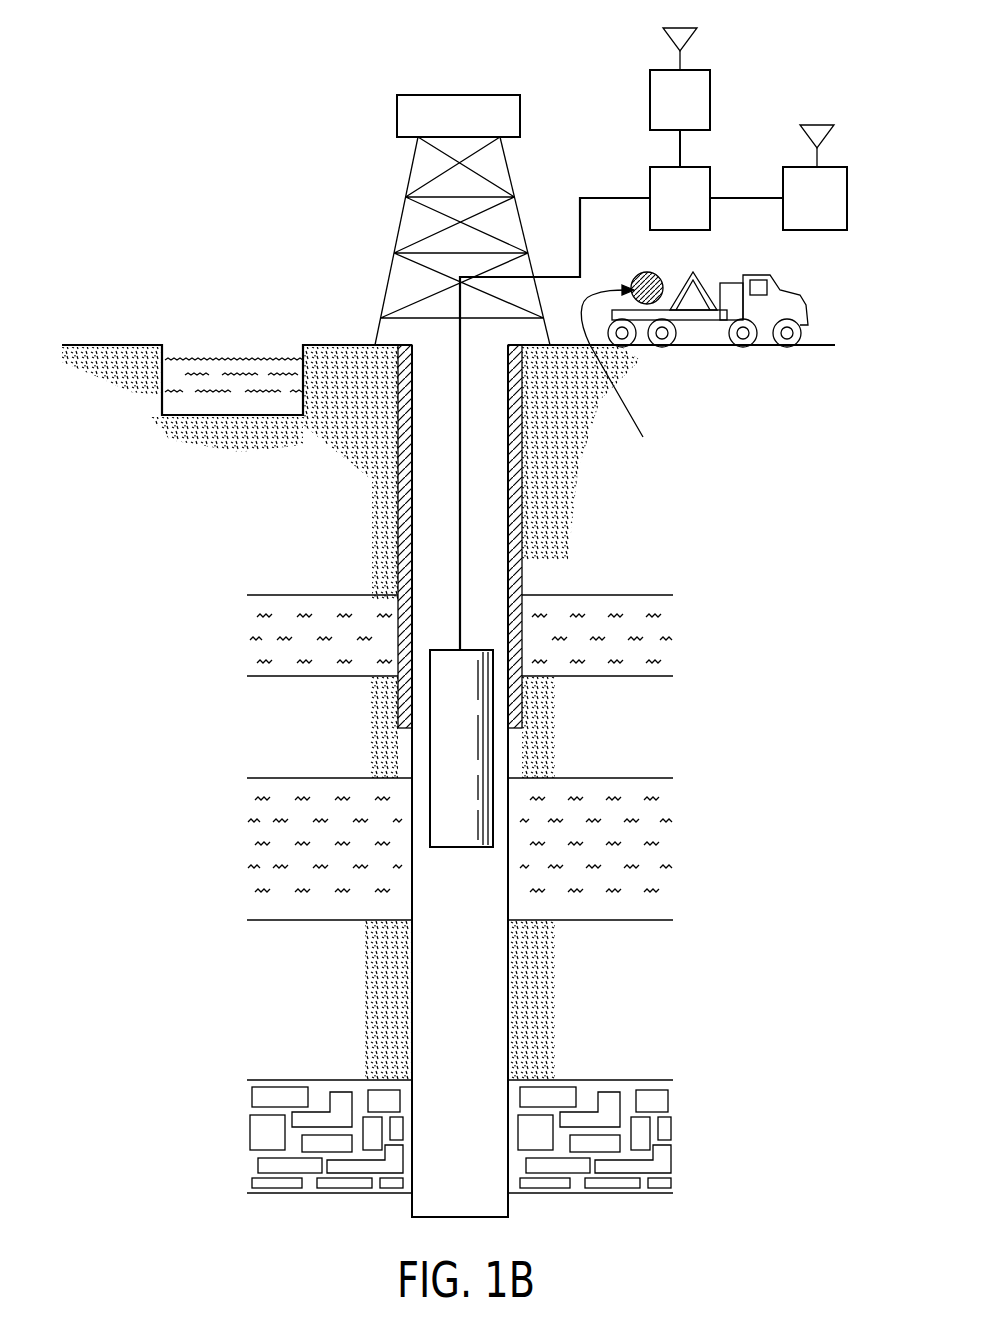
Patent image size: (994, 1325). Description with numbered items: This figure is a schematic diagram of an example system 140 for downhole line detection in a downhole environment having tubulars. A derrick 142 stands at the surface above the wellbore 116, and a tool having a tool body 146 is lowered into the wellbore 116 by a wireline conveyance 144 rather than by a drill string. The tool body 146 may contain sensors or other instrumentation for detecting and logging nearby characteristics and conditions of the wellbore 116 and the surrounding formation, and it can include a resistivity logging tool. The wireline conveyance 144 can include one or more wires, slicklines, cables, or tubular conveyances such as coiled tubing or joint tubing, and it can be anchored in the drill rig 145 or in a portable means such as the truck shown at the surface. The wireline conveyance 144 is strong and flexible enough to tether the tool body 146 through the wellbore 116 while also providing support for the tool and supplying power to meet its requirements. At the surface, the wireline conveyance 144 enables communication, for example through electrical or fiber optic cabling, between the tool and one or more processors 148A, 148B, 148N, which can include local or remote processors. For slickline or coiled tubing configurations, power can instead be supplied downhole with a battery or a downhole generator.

The wellbore 116 is at (503, 997).
The system 140 is at (303, 140).
The derrick 142 is at (530, 148).
The wireline conveyance 144 is at (460, 290).
The drill rig 145 is at (621, 380).
The tool body 146 is at (445, 735).
The processor 148A is at (650, 75).
The processor 148B is at (710, 167).
The processor 148N is at (810, 230).